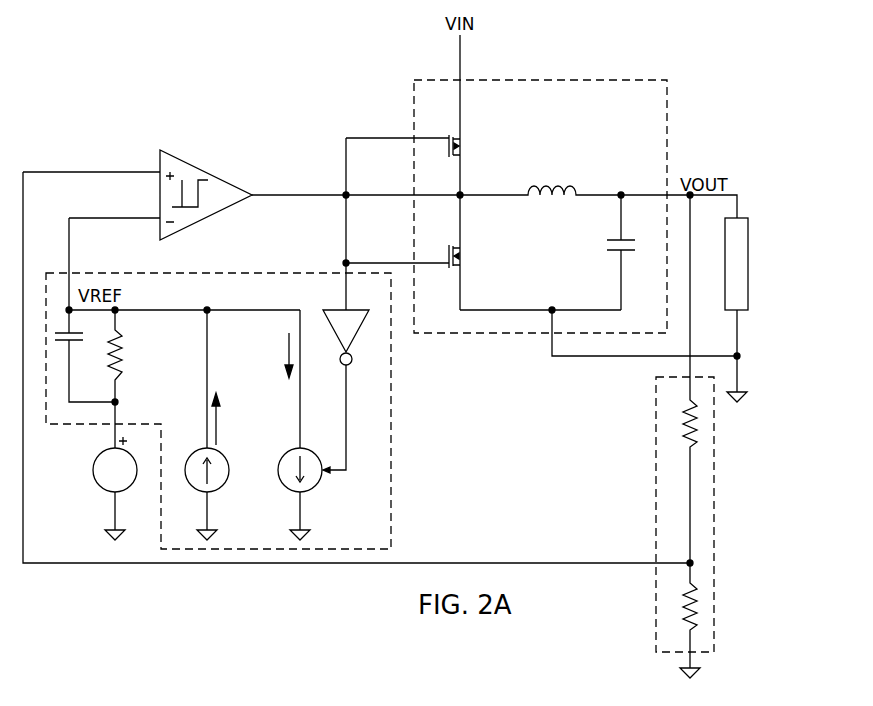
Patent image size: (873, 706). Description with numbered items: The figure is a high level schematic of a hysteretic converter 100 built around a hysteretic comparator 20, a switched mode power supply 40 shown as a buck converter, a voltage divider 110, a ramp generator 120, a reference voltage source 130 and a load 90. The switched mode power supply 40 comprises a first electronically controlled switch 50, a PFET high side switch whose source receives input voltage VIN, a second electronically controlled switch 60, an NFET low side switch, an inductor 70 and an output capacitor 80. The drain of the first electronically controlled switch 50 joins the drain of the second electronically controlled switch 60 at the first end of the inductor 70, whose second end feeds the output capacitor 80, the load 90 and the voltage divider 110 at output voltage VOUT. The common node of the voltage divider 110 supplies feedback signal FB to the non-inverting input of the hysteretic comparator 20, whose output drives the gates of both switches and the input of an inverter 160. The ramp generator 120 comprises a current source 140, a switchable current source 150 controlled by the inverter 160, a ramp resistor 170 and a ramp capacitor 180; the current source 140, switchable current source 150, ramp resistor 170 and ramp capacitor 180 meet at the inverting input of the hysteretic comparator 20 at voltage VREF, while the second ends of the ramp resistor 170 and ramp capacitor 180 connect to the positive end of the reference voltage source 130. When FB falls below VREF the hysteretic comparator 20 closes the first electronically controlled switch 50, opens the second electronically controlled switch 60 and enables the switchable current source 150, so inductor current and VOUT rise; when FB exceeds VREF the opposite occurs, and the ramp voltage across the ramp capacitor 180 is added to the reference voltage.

The hysteretic converter 100 is at (108, 41).
The hysteretic comparator 20 is at (205, 220).
The switched mode power supply 40 is at (667, 128).
The first electronically controlled switch 50 is at (463, 142).
The second electronically controlled switch 60 is at (463, 263).
The inductor 70 is at (577, 182).
The output capacitor 80 is at (617, 254).
The load 90 is at (748, 262).
The voltage divider 110 is at (714, 462).
The ramp generator 120 is at (391, 395).
The reference voltage source 130 is at (93, 478).
The current source 140 is at (226, 482).
The switchable current source 150 is at (318, 485).
The inverter 160 is at (355, 337).
The ramp resistor 170 is at (124, 355).
The ramp capacitor 180 is at (85, 338).